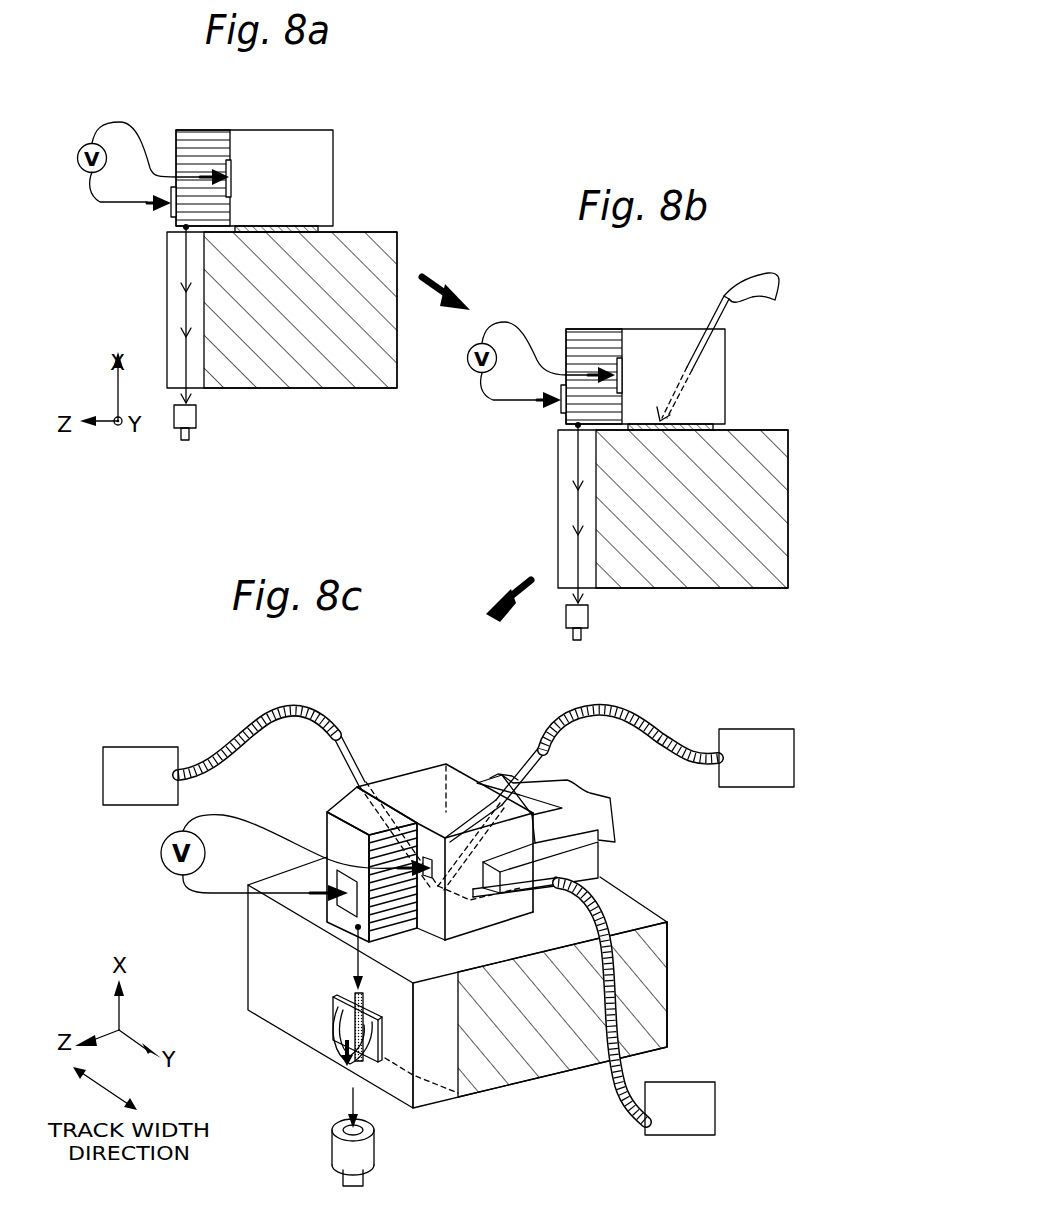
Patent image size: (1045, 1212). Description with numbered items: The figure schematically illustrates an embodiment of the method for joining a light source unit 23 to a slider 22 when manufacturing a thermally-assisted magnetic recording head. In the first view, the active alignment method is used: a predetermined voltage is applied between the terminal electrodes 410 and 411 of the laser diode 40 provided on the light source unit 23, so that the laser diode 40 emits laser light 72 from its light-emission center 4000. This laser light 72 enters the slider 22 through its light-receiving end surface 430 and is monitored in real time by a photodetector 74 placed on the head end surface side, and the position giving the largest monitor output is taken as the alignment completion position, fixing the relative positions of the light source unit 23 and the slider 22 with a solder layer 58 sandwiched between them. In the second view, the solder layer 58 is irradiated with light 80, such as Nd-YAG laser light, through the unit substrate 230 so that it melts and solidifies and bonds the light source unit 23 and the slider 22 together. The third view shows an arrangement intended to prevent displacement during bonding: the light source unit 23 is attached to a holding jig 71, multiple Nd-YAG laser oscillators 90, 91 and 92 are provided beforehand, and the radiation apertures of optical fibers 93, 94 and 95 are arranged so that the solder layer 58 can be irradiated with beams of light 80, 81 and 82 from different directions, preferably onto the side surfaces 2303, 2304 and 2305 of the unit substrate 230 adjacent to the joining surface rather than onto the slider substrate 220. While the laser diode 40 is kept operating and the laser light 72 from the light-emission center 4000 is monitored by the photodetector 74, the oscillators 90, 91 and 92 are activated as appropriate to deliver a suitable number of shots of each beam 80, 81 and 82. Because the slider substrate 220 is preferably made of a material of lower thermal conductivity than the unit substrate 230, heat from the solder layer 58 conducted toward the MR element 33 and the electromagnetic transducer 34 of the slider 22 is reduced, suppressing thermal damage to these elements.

In FIG. 8A, the slider 22 is at (368, 230).
In FIG. 8B, the slider 22 is at (751, 430).
In FIG. 8C, the slider 22 is at (658, 908).
In FIG. 8A, the light source unit 23 is at (319, 124).
In FIG. 8B, the light source unit 23 is at (637, 324).
In FIG. 8C, the light source unit 23 is at (447, 752).
In FIG. 8A, the laser diode 40 is at (202, 143).
In FIG. 8C, the laser diode 40 is at (352, 813).
In FIG. 8A, the terminal electrode 410 is at (231, 168).
In FIG. 8A, the terminal electrode 411 is at (169, 208).
In FIG. 8A, the solder layer 58 is at (287, 226).
In FIG. 8B, the solder layer 58 is at (673, 422).
In FIG. 8C, the solder layer 58 is at (463, 905).
In FIG. 8A, the light-emission center 4000 is at (184, 228).
In FIG. 8C, the light-emission center 4000 is at (356, 927).
In FIG. 8A, the light-receiving end surface 430 is at (182, 240).
In FIG. 8A, the photodetector 74 is at (191, 417).
In FIG. 8B, the photodetector 74 is at (583, 617).
In FIG. 8C, the photodetector 74 is at (350, 1147).
In FIG. 8B, the unit substrate 230 is at (680, 328).
In FIG. 8C, the unit substrate 230 is at (387, 784).
In FIG. 8B, the light 80 is at (702, 354).
In FIG. 8C, the light 80 is at (545, 892).
In FIG. 8C, the light 81 is at (541, 752).
In FIG. 8C, the light 82 is at (347, 752).
In FIG. 8C, the Nd-YAG laser oscillator 90 is at (720, 1080).
In FIG. 8C, the Nd-YAG laser oscillator 91 is at (772, 735).
In FIG. 8C, the Nd-YAG laser oscillator 92 is at (138, 752).
In FIG. 8C, the optical fiber 93 is at (608, 1092).
In FIG. 8C, the optical fiber 94 is at (634, 716).
In FIG. 8C, the optical fiber 95 is at (248, 742).
In FIG. 8C, the side surface 2303 is at (535, 870).
In FIG. 8C, the side surface 2304 is at (478, 784).
In FIG. 8C, the side surface 2305 is at (424, 785).
In FIG. 8C, the holding jig 71 is at (570, 832).
In FIG. 8C, the laser light 72 is at (357, 960).
In FIG. 8C, the slider substrate 220 is at (660, 987).
In FIG. 8C, the MR element 33 is at (334, 1007).
In FIG. 8C, the electromagnetic transducer 34 is at (335, 1028).